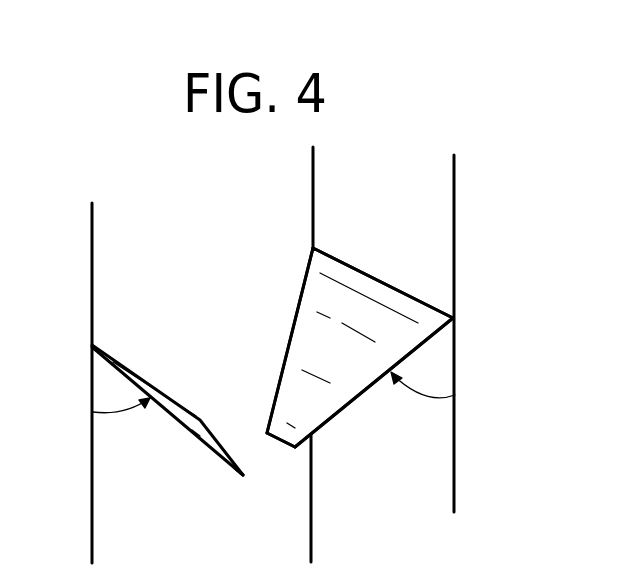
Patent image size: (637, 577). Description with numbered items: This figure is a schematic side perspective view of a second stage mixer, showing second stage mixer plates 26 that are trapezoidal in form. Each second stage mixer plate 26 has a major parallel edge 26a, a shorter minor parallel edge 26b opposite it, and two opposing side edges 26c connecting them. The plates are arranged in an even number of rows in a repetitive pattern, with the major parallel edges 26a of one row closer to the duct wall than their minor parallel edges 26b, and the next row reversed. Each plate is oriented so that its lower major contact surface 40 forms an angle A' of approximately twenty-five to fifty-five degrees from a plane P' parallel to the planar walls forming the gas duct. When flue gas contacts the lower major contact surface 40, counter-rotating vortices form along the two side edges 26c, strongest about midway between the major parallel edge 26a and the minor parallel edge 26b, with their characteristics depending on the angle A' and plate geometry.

The second stage mixer plate 26 is at (403, 365).
The major parallel edge 26a is at (368, 273).
The minor parallel edge 26b is at (278, 443).
The side edge 26c is at (290, 337).
The lower major contact surface 40 is at (185, 423).
The plane P' is at (306, 355).
The angle A' is at (274, 410).